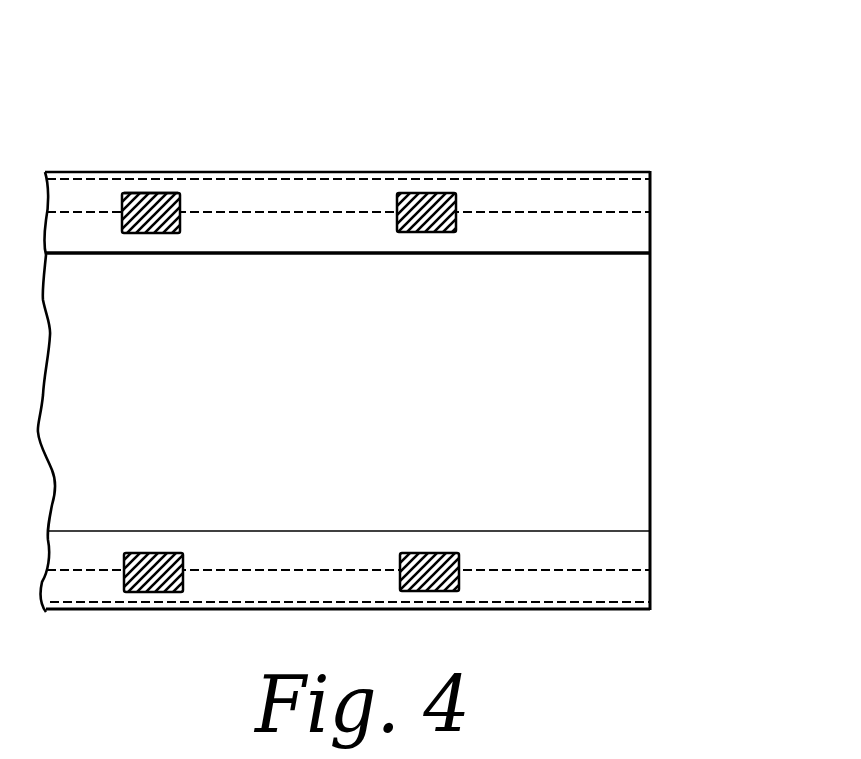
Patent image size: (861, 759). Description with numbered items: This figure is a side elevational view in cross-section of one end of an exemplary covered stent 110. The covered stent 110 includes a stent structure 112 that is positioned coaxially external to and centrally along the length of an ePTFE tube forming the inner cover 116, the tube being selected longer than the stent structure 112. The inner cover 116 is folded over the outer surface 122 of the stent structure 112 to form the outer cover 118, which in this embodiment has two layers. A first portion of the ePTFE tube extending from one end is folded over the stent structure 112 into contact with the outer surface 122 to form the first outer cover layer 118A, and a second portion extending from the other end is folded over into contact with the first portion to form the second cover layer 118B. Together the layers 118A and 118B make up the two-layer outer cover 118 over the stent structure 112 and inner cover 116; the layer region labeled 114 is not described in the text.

The covered stent 110 is at (705, 107).
The stent structure 112 is at (165, 233).
The lower layer 114 is at (660, 531).
The inner cover 116 is at (660, 213).
The outer cover 118 is at (380, 162).
The first outer cover layer 118A is at (505, 195).
The second cover layer 118B is at (528, 173).
The outer surface 122 is at (148, 194).